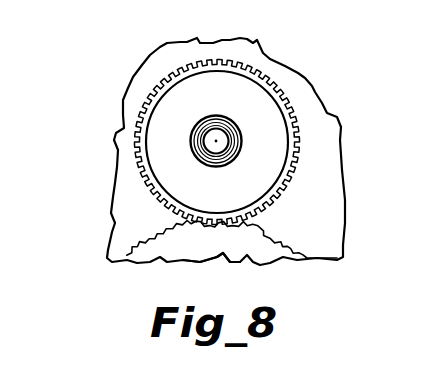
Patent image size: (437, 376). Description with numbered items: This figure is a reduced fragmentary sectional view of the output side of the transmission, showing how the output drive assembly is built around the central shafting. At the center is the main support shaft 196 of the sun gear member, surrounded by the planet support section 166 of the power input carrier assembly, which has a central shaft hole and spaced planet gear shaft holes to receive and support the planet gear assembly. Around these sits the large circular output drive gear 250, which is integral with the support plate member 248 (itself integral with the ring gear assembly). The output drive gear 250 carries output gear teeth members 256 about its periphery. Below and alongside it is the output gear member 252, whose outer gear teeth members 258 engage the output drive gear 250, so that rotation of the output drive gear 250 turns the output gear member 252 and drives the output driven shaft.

The support plate member 248 is at (163, 66).
The output gear teeth members 256 is at (248, 103).
The output drive gear 250 is at (298, 73).
The main support shaft 196 is at (228, 133).
The planet support section 166 is at (240, 157).
The outer gear teeth members 258 is at (263, 240).
The output gear member 252 is at (248, 250).